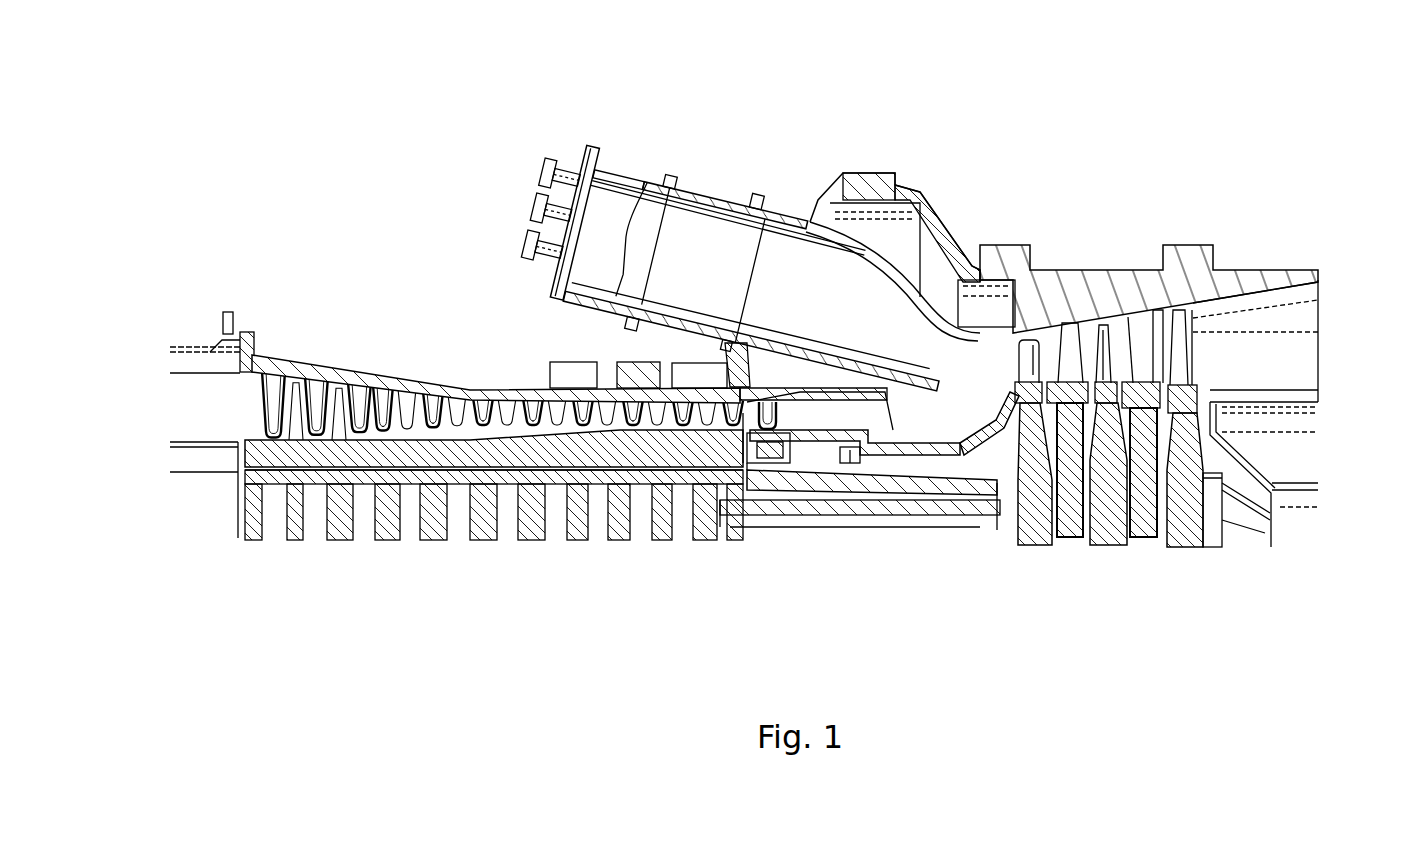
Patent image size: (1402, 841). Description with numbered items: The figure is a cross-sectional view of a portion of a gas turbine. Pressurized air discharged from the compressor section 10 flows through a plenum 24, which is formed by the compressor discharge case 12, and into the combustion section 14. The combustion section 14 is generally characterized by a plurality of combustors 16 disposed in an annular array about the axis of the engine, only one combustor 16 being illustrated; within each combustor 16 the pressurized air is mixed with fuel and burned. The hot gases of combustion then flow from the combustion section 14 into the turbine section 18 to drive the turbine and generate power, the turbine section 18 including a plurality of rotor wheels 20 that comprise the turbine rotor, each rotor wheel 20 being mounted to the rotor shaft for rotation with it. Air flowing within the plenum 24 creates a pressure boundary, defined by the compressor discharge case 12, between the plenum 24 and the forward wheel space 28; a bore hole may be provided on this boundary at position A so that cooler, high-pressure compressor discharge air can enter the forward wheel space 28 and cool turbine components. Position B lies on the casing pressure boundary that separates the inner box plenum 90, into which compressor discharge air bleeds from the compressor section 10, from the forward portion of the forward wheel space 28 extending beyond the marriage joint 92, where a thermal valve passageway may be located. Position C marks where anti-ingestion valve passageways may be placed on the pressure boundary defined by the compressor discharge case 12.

The compressor section 10 is at (725, 349).
The compressor discharge case 12 is at (955, 457).
The combustion section 14 is at (568, 102).
The combustor 16 is at (551, 212).
The turbine section 18 is at (1010, 230).
The rotor wheel 20 is at (1100, 513).
The plenum 24 is at (931, 430).
The forward wheel space 28 is at (985, 455).
The inner box plenum 90 is at (748, 470).
The marriage joint 92 is at (850, 463).
The position A is at (918, 456).
The position B is at (778, 463).
The position C is at (969, 428).